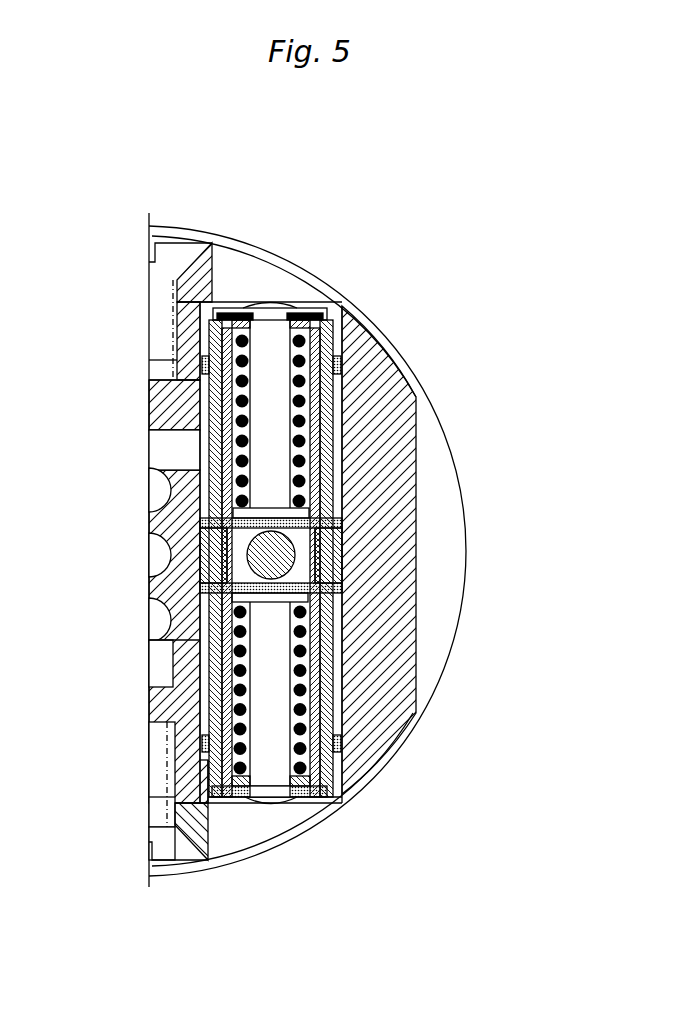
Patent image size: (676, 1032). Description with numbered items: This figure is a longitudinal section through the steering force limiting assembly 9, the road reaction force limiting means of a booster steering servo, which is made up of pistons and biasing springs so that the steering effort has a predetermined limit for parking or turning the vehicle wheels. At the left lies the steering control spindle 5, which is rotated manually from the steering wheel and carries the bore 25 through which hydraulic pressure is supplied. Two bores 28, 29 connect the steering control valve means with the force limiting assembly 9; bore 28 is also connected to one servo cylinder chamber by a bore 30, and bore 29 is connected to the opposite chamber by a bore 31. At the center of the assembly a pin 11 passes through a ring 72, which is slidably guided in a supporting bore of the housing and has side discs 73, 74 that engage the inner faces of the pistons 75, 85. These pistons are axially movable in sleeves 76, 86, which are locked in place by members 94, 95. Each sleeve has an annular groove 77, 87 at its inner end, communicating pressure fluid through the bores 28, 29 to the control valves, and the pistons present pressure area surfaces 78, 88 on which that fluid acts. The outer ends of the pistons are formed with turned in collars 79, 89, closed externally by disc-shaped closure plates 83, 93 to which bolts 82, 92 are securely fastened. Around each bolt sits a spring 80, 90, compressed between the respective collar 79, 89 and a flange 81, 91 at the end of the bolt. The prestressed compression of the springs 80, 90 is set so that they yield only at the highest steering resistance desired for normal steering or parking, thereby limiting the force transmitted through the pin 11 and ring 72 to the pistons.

The steering control spindle 5 is at (183, 690).
The steering force limiting assembly 9 is at (433, 194).
The pin 11 is at (255, 550).
The bore 25 is at (175, 556).
The bore 28 is at (173, 450).
The bore 29 is at (183, 660).
The bore 30 is at (163, 488).
The bore 31 is at (165, 626).
The ring 72 is at (252, 558).
The side disc 73 is at (292, 542).
The side disc 74 is at (318, 588).
The piston 75 is at (297, 513).
The sleeve 76 is at (395, 362).
The annular groove 77 is at (336, 432).
The surface 78 is at (318, 470).
The turned in collar 79 is at (225, 326).
The spring 80 is at (200, 380).
The flange 81 is at (322, 522).
The bolt 82 is at (352, 310).
The closure plate 83 is at (203, 308).
The piston 85 is at (352, 629).
The sleeve 86 is at (333, 712).
The annular groove 87 is at (272, 762).
The surface 88 is at (338, 668).
The turned in collar 89 is at (176, 798).
The spring 90 is at (202, 753).
The flange 91 is at (200, 590).
The bolt 92 is at (335, 778).
The closure plate 93 is at (300, 806).
The locking member 94 is at (202, 285).
The locking member 95 is at (175, 837).